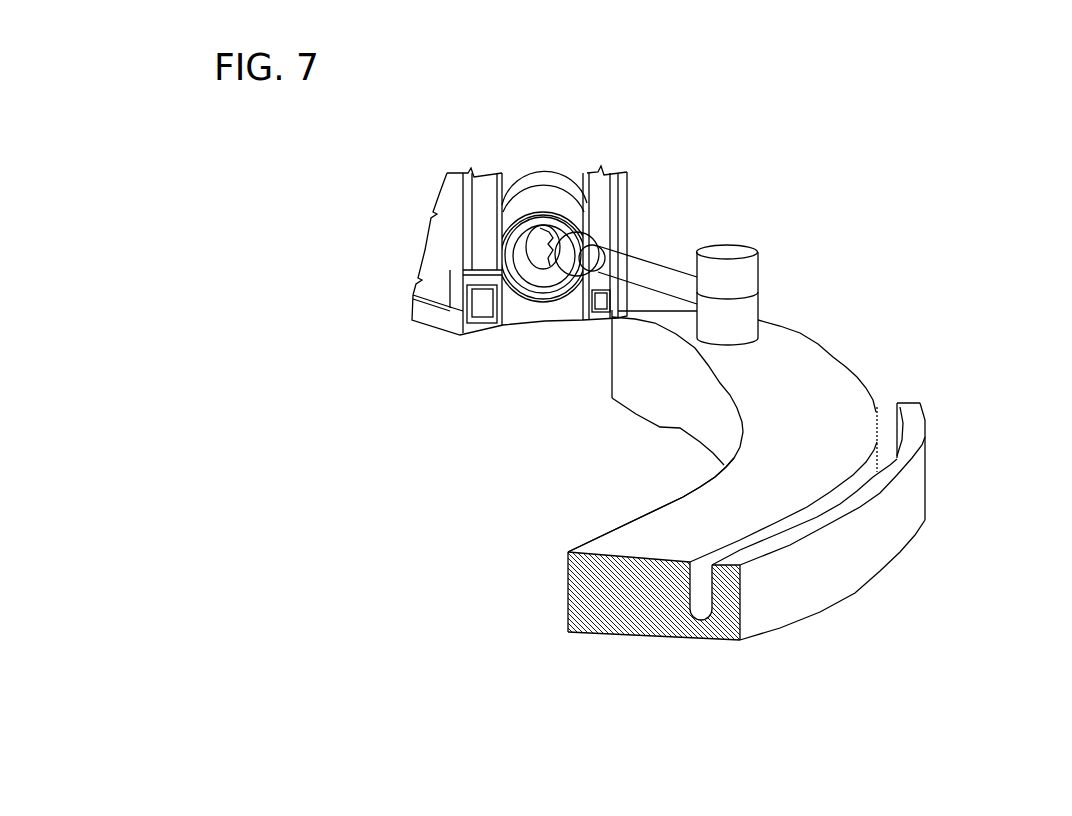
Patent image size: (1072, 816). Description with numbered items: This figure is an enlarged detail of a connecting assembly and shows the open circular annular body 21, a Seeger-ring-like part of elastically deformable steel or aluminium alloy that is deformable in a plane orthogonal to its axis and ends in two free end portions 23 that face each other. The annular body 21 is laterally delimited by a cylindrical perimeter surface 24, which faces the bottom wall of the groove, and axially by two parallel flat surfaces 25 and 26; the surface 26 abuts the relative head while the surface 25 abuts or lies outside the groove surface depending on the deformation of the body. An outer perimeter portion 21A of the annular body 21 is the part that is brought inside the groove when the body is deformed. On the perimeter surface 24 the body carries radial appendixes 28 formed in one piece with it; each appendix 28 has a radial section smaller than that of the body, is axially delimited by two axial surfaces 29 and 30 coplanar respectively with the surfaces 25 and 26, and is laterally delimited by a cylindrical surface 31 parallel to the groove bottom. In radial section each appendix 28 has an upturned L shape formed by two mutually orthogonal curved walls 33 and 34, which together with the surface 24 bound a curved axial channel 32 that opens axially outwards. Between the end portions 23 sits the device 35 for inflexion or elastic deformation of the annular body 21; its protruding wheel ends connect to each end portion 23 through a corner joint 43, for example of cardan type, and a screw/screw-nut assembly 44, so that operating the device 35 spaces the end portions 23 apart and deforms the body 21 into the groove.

The annular body 21 is at (620, 412).
The outer perimeter portion 21A is at (568, 590).
The free end portions 23 is at (788, 352).
The cylindrical perimeter surface 24 is at (864, 372).
The flat surface 25 is at (634, 543).
The flat surface 26 is at (630, 642).
The radial appendixes 28 is at (932, 492).
The axial surface 29 is at (910, 404).
The axial surface 30 is at (726, 648).
The cylindrical surface 31 is at (845, 566).
The curved axial channel 32 is at (701, 590).
The curved wall 33 is at (808, 586).
The curved wall 34 is at (700, 624).
The device for inflexion or elastic deformation 35 is at (657, 168).
The corner joint 43 is at (602, 217).
The screw/screw-nut assembly 44 is at (663, 243).